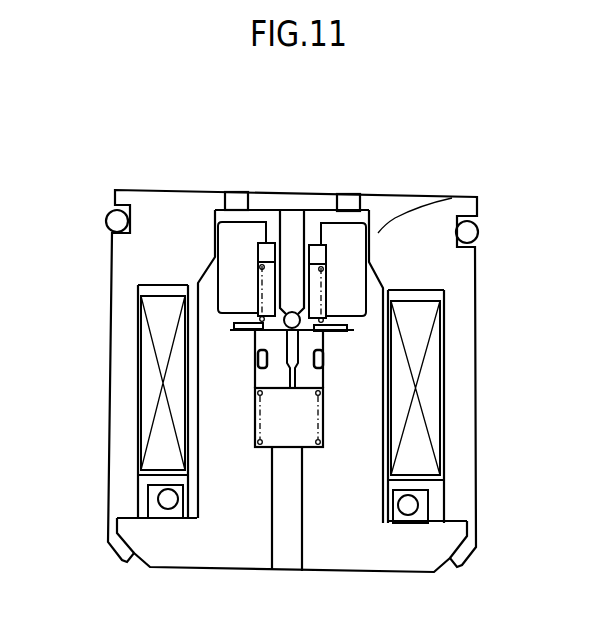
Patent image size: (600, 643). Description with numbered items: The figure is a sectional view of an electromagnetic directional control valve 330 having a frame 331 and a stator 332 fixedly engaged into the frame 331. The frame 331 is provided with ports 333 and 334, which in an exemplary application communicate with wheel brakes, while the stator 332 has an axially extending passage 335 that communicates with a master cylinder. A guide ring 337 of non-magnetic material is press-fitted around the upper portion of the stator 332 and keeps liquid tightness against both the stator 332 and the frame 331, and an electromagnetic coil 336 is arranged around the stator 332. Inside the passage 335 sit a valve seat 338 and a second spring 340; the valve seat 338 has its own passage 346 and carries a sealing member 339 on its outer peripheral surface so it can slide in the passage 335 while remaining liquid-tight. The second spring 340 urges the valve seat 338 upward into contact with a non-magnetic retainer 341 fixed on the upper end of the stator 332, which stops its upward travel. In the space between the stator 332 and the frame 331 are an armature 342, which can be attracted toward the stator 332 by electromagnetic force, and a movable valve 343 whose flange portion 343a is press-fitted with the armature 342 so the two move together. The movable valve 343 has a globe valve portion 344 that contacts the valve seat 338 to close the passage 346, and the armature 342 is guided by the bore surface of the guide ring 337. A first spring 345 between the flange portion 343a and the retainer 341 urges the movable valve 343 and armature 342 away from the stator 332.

The electromagnetic directional control valve 330 is at (98, 212).
The frame 331 is at (143, 197).
The stator 332 is at (366, 569).
The port 333 is at (228, 200).
The port 334 is at (340, 202).
The passage 335 is at (286, 568).
The electromagnetic coil 336 is at (442, 382).
The guide ring 337 is at (195, 367).
The valve seat 338 is at (300, 326).
The sealing member 339 is at (257, 357).
The second spring 340 is at (257, 440).
The retainer 341 is at (350, 328).
The armature 342 is at (452, 198).
The movable valve 343 is at (282, 210).
The flange portion 343a is at (383, 222).
The globe valve portion 344 is at (240, 326).
The first spring 345 is at (260, 290).
The passage 346 is at (303, 368).